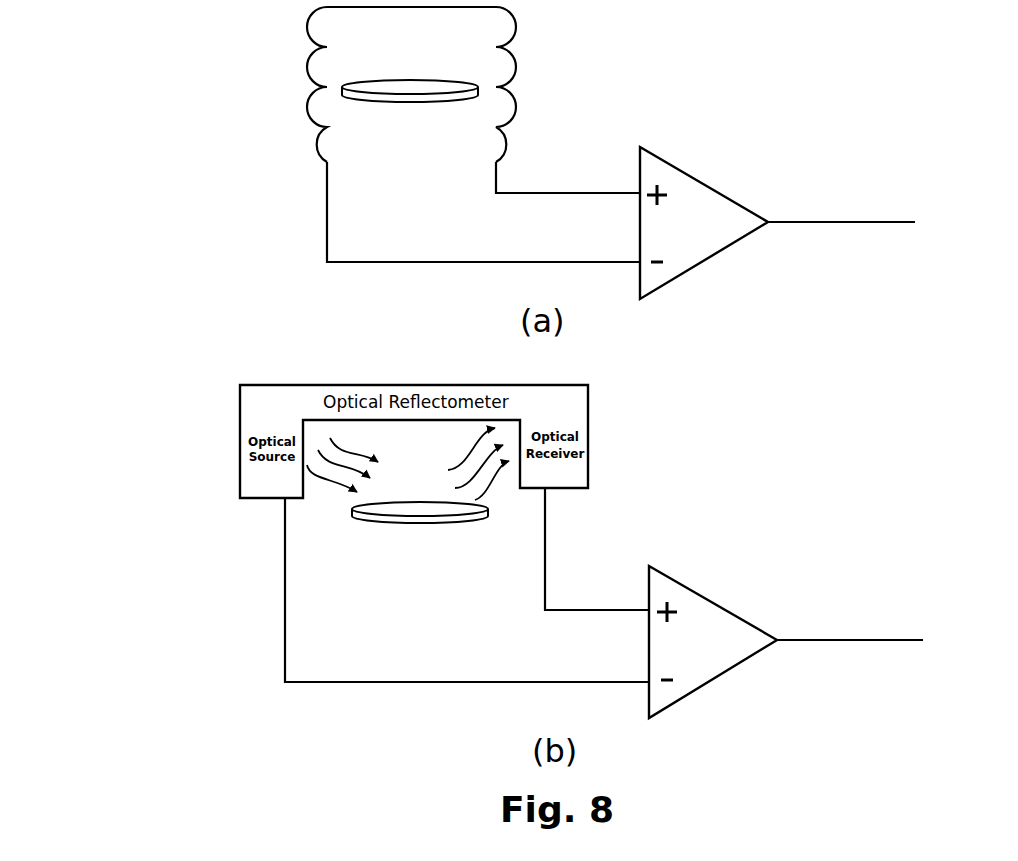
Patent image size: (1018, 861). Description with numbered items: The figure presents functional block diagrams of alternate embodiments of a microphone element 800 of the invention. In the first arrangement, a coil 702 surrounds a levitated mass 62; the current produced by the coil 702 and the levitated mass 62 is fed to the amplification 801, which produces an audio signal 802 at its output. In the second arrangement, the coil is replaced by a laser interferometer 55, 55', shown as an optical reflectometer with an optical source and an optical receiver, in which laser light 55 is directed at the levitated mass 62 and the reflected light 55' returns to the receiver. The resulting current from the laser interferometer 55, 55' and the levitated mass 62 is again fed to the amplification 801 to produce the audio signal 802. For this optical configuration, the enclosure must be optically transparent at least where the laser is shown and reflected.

The detection system 800 is at (128, 107).
The coil 702 is at (306, 44).
The levitated mass 62 is at (404, 106).
The amplification 801 is at (701, 180).
The audio signal 802 is at (963, 206).
The laser interferometer 55 is at (339, 508).
The laser interferometer 55' is at (493, 500).